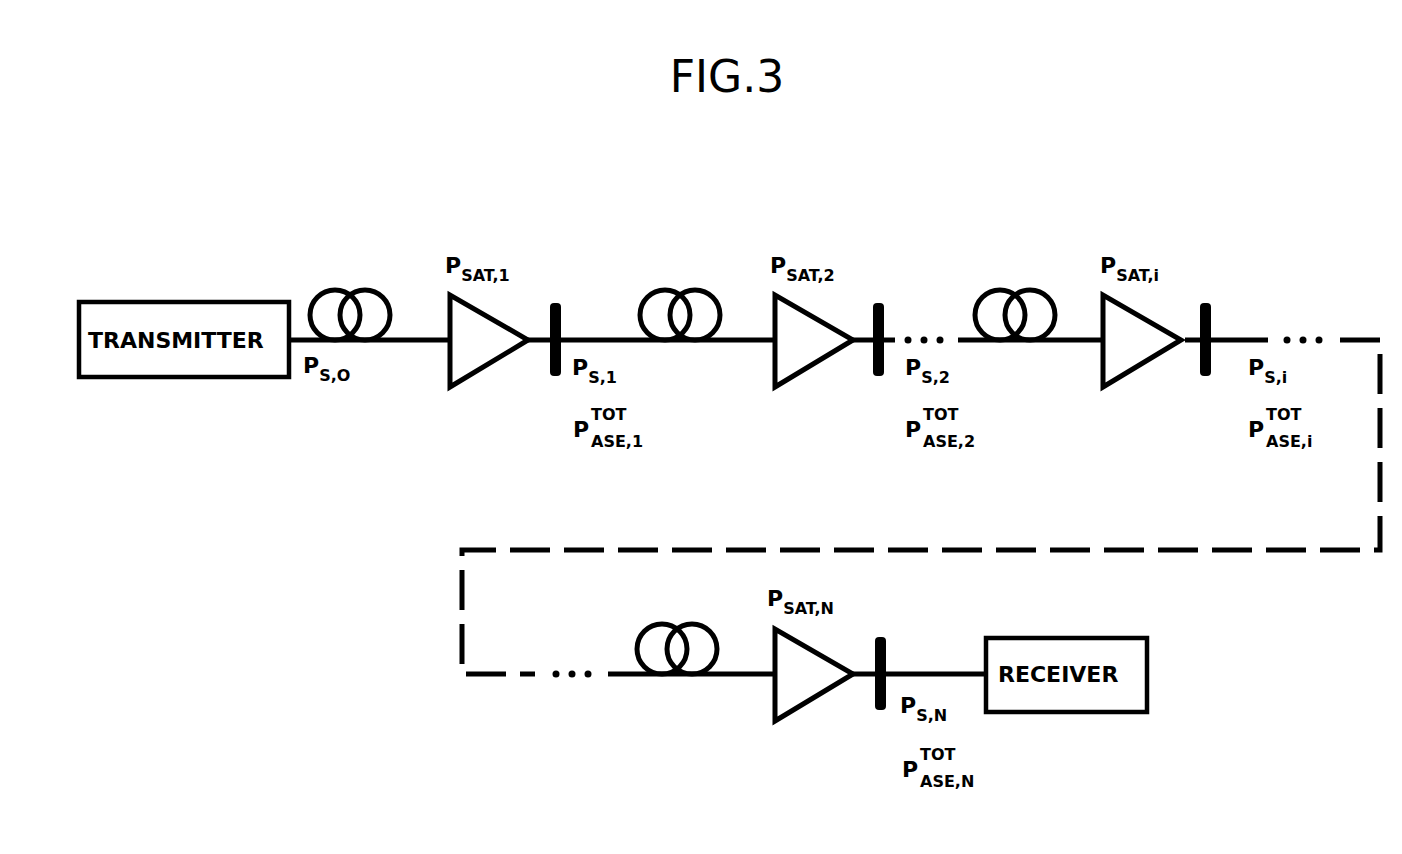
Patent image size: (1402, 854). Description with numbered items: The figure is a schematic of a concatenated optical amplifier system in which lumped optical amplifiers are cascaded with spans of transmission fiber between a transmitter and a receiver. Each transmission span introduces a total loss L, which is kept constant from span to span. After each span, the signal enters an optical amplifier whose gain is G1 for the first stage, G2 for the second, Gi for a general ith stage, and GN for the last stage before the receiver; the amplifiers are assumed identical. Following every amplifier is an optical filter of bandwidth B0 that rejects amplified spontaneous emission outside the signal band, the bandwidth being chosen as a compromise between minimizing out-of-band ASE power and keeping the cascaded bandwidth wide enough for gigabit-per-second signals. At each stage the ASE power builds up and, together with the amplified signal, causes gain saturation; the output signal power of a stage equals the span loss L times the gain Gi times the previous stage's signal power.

The transmission span loss L is at (682, 462).
The optical filter bandwidth B0 is at (884, 491).
The first amplifier gain G1 is at (489, 364).
The second amplifier gain G2 is at (814, 364).
The ith amplifier gain Gi is at (1140, 364).
The Nth amplifier gain GN is at (812, 695).